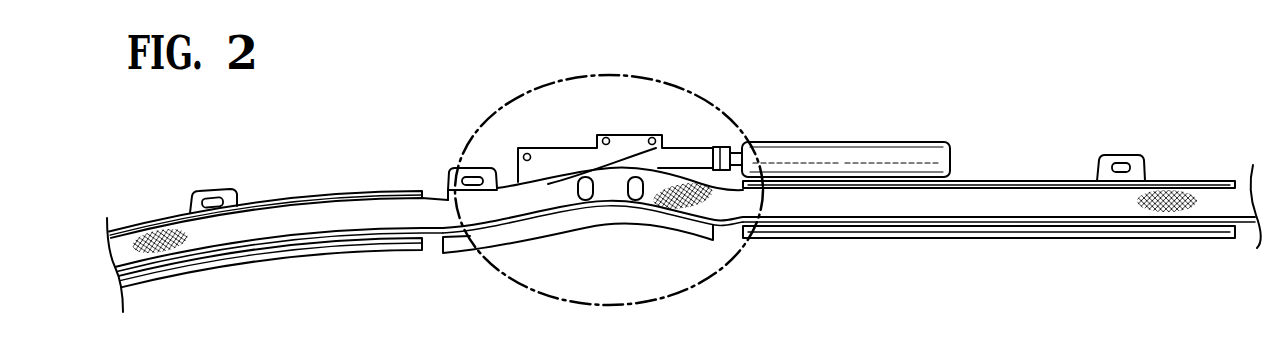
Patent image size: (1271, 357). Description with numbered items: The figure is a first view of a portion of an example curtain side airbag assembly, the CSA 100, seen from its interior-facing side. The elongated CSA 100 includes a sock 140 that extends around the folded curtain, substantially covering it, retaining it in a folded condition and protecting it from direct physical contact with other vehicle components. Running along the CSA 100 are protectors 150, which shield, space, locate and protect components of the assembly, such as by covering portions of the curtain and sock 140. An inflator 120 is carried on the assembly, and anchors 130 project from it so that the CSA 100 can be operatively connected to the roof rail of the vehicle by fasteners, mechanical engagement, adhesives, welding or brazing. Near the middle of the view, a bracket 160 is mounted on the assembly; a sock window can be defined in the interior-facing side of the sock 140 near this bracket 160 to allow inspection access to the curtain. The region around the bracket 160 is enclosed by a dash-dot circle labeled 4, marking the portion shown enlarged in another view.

The detail region shown in FIG. 4 is at (672, 82).
The CSA 100 is at (1047, 117).
The inflator 120 is at (852, 153).
The anchor 130 is at (1122, 157).
The sock 140 is at (277, 227).
The protector 150 is at (360, 192).
The bracket 160 is at (563, 157).